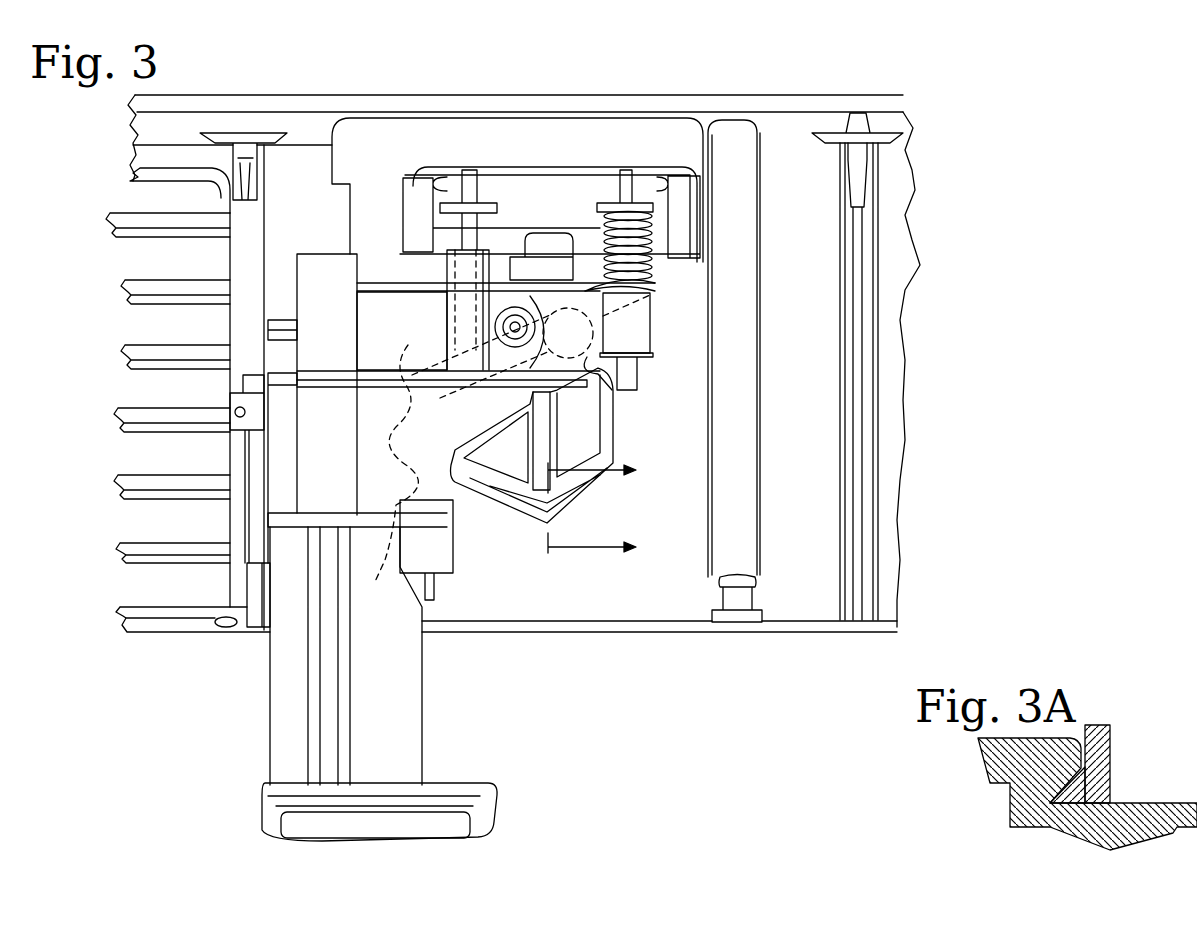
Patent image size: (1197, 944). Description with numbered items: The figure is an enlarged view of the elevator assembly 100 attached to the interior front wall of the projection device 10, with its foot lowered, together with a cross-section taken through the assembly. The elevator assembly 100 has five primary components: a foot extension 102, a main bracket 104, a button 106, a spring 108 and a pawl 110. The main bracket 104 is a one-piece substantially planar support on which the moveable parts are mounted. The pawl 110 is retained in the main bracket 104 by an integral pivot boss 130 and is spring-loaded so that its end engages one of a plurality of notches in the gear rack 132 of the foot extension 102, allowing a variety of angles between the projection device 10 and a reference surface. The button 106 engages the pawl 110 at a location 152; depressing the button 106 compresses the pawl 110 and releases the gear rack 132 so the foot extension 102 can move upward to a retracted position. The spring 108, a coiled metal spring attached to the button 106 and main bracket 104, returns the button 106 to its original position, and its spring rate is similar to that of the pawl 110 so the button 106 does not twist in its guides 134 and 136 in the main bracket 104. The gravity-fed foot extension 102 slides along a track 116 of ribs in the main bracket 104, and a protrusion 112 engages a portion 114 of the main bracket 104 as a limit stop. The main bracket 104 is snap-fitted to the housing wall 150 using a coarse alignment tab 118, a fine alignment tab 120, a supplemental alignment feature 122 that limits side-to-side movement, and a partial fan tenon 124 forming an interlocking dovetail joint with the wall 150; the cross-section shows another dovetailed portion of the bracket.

In FIG. 3, the projection device 10 is at (528, 603).
In FIG. 3, the elevator assembly 100 is at (609, 501).
In FIG. 3A, the elevator assembly 100 is at (1153, 742).
In FIG. 3, the foot extension 102 is at (274, 758).
In FIG. 3, the main bracket 104 is at (662, 327).
In FIG. 3, the button 106 is at (583, 190).
In FIG. 3, the spring 108 is at (660, 268).
In FIG. 3, the pawl 110 is at (648, 297).
In FIG. 3, the protrusion 112 is at (282, 330).
In FIG. 3, the portion of the main bracket 114 is at (262, 351).
In FIG. 3, the track 116 is at (326, 652).
In FIG. 3, the coarse alignment tab 118 is at (385, 197).
In FIG. 3, the fine alignment tab 120 is at (557, 242).
In FIG. 3, the supplemental alignment feature 122 is at (578, 435).
In FIG. 3, the partial fan tenon 124 is at (262, 543).
In FIG. 3, the pivot boss 130 is at (527, 323).
In FIG. 3, the gear rack 132 is at (397, 540).
In FIG. 3, the guide 134 is at (645, 340).
In FIG. 3, the guide 136 is at (457, 280).
In FIG. 3, the housing wall 150 is at (905, 195).
In FIG. 3, the engagement location 152 is at (447, 345).